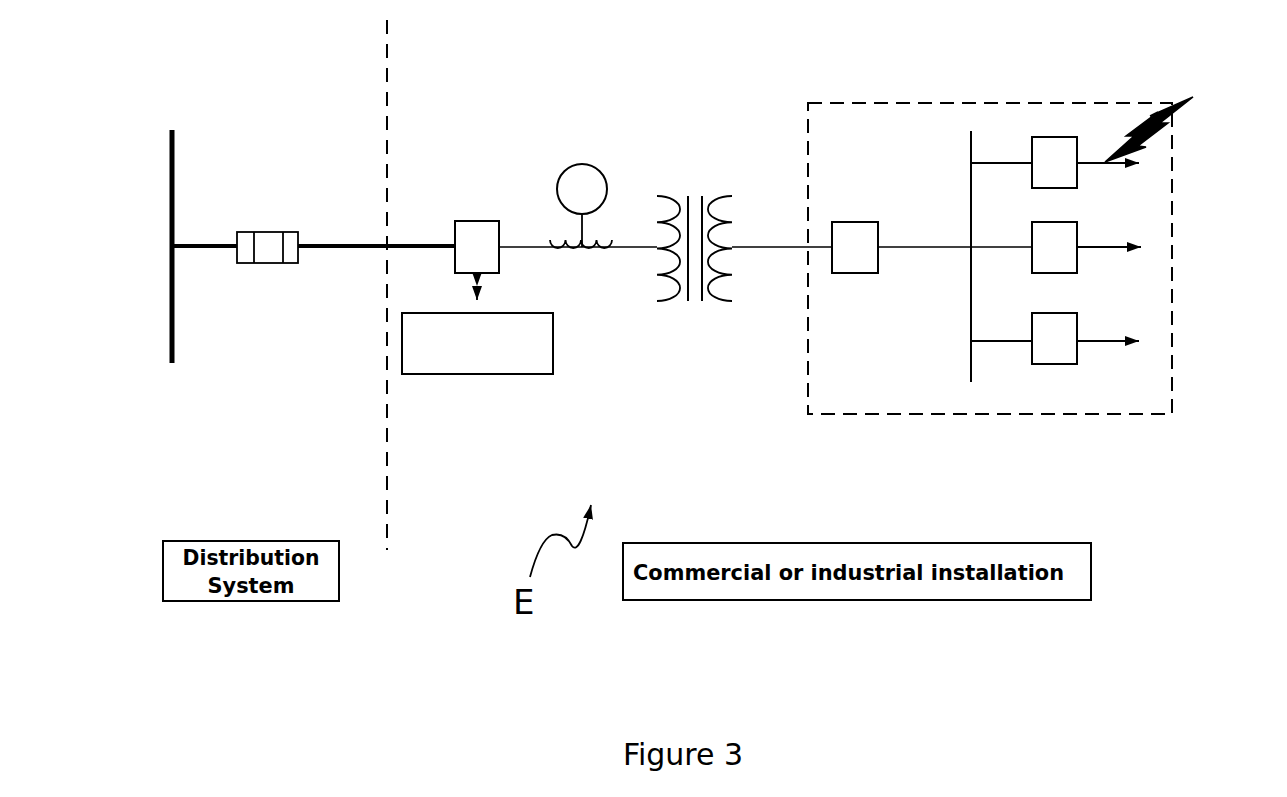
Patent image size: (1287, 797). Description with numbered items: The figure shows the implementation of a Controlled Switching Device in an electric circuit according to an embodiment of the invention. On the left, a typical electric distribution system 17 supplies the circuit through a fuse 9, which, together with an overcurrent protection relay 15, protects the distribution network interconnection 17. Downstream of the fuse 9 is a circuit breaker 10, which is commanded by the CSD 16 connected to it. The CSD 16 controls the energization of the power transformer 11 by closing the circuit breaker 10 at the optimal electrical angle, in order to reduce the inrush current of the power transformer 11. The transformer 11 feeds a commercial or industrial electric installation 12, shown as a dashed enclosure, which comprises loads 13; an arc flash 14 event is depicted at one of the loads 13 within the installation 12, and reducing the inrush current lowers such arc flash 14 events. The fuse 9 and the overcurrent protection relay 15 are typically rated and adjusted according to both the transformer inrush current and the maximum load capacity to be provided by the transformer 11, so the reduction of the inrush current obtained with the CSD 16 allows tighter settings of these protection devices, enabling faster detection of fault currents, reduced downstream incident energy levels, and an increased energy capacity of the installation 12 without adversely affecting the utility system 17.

The fuse 9 is at (267, 184).
The circuit breaker 10 is at (556, 191).
The power transformer 11 is at (744, 309).
The electric installation 12 is at (990, 207).
The loads 13 is at (1023, 256).
The arc flash 14 is at (1172, 117).
The overcurrent protection relay 15 is at (601, 155).
The CSD 16 is at (477, 385).
The electric distribution system 17 is at (313, 284).